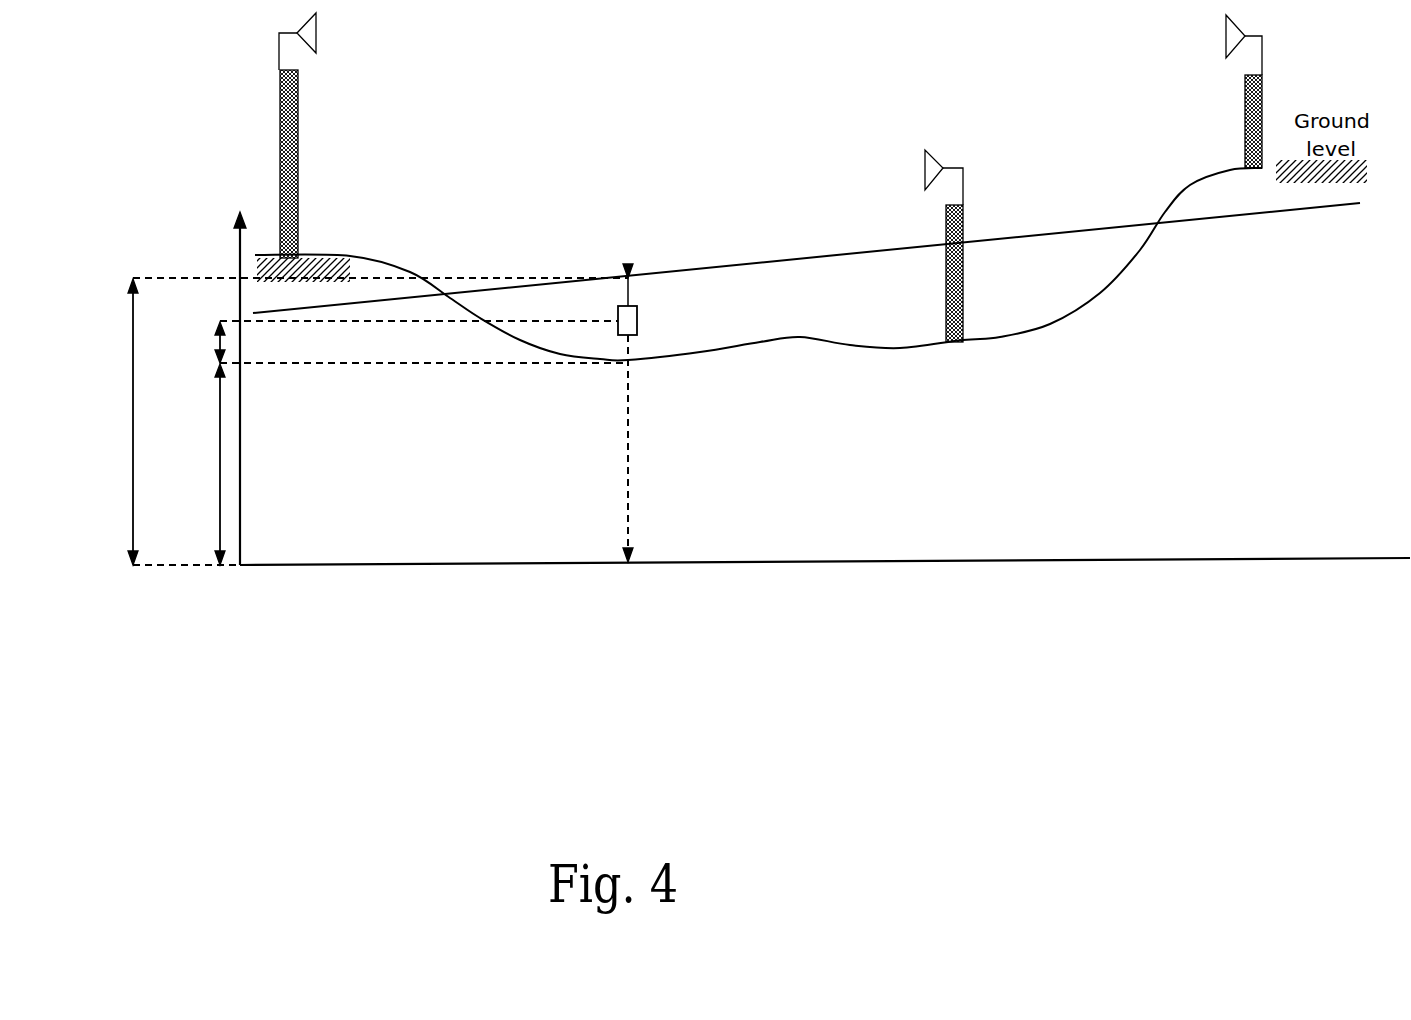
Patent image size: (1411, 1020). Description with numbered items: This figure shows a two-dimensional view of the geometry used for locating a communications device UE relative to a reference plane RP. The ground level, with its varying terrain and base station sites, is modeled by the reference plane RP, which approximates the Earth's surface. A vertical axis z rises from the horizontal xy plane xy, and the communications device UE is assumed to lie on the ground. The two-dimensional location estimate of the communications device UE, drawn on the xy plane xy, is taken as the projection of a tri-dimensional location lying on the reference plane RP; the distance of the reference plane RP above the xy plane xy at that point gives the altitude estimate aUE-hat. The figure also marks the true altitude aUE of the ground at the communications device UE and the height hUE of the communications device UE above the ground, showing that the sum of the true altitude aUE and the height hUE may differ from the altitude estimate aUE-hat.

The communications device UE is at (642, 543).
The reference plane RP is at (806, 250).
The z axis z is at (239, 377).
The xy plane xy is at (1140, 560).
The height of the communications device hUE is at (191, 348).
The true altitude of the communications device aUE is at (197, 464).
The altitude estimate aUE-hat is at (110, 422).